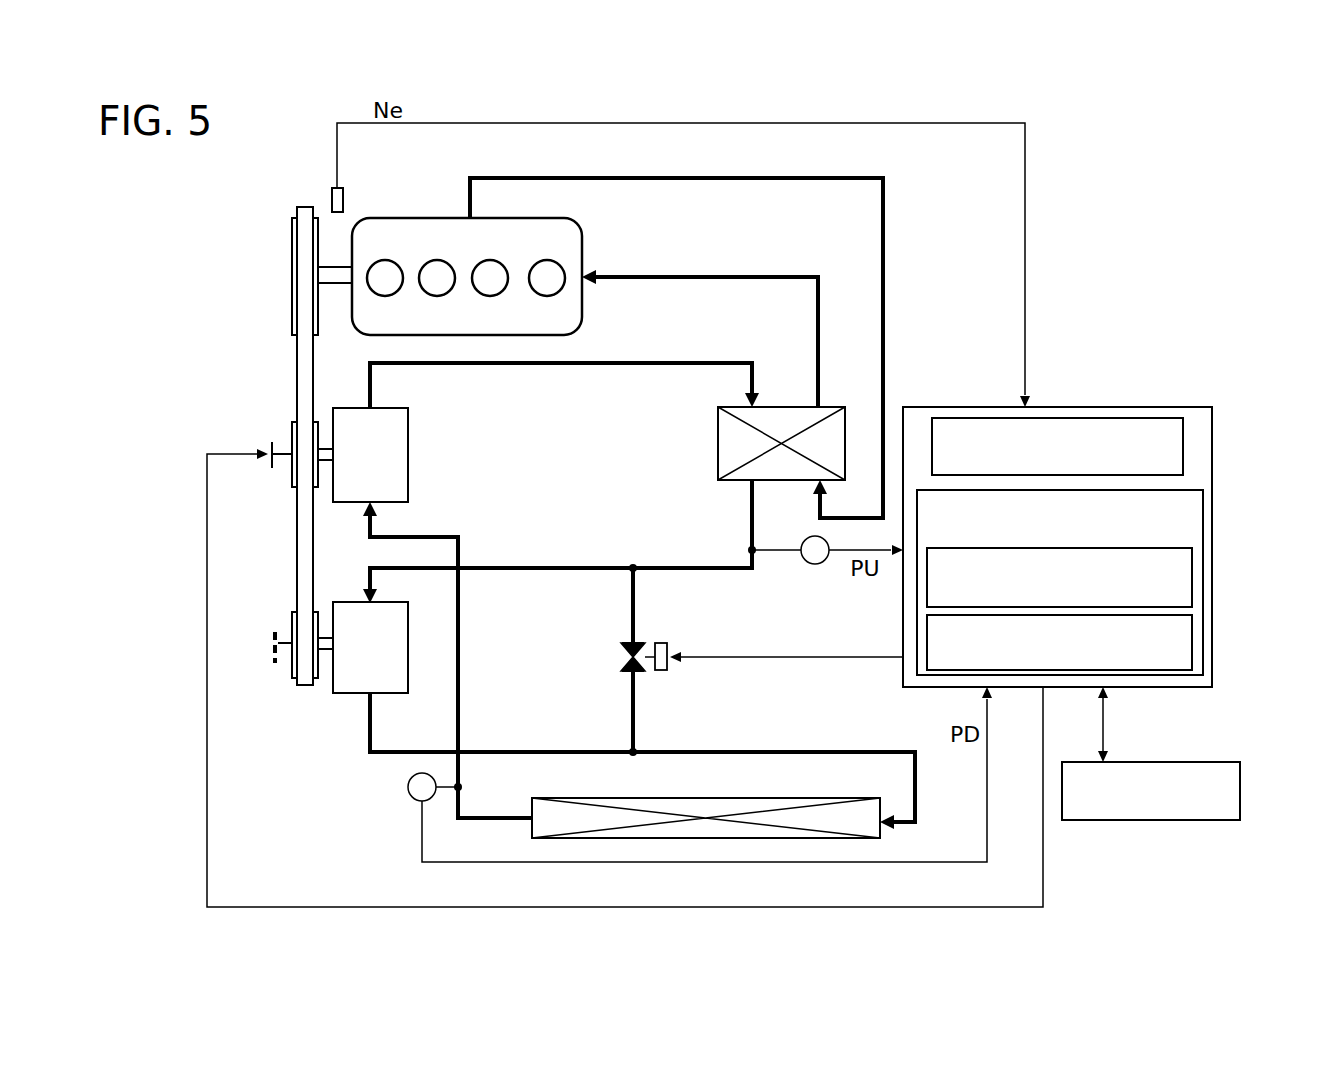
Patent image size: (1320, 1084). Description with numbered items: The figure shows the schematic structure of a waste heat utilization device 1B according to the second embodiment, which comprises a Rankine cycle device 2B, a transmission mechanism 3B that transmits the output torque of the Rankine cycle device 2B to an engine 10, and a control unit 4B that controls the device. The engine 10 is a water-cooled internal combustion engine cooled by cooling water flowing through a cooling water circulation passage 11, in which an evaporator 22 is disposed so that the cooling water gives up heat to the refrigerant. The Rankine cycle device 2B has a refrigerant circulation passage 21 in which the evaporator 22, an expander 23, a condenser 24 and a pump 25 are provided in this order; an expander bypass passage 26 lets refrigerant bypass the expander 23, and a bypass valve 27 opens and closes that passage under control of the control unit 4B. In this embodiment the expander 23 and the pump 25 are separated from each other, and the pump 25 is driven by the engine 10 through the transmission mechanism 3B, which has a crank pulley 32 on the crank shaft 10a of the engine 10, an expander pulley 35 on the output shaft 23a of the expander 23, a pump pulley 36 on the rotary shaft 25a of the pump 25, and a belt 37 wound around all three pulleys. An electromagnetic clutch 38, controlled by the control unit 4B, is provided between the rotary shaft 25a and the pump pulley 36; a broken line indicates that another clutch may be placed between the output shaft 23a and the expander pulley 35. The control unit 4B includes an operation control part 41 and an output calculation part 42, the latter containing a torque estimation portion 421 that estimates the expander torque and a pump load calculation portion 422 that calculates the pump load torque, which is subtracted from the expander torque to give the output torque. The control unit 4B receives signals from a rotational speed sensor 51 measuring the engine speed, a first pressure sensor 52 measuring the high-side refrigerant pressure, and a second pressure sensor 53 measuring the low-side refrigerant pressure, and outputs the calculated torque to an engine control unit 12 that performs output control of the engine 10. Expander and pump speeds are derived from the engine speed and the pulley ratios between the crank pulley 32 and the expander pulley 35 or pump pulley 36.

The waste heat utilization device 1B is at (1085, 165).
The Rankine cycle device 2B is at (322, 833).
The transmission mechanism 3B is at (190, 333).
The control unit 4B is at (1148, 407).
The engine 10 is at (582, 232).
The crank shaft 10a is at (335, 290).
The cooling water circulation passage 11 is at (888, 268).
The engine control unit 12 is at (1205, 762).
The circulation passage 21 is at (635, 363).
The evaporator 22 is at (758, 405).
The expander 23 is at (370, 647).
The output shaft 23a is at (326, 655).
The condenser 24 is at (695, 798).
The pump 25 is at (370, 455).
The rotary shaft 25a is at (326, 462).
The expander bypass passage 26 is at (630, 615).
The bypass valve 27 is at (620, 664).
The crank pulley 32 is at (292, 252).
The expander pulley 35 is at (292, 622).
The pump pulley 36 is at (292, 430).
The belt 37 is at (292, 345).
The electromagnetic clutch 38 is at (272, 468).
The operation control part 41 is at (1185, 422).
The output calculation part 42 is at (1203, 552).
The torque estimation portion 421 is at (1192, 592).
The pump load calculation portion 422 is at (1192, 632).
The rotational speed sensor 51 is at (330, 190).
The first pressure sensor 52 is at (812, 565).
The second pressure sensor 53 is at (408, 793).